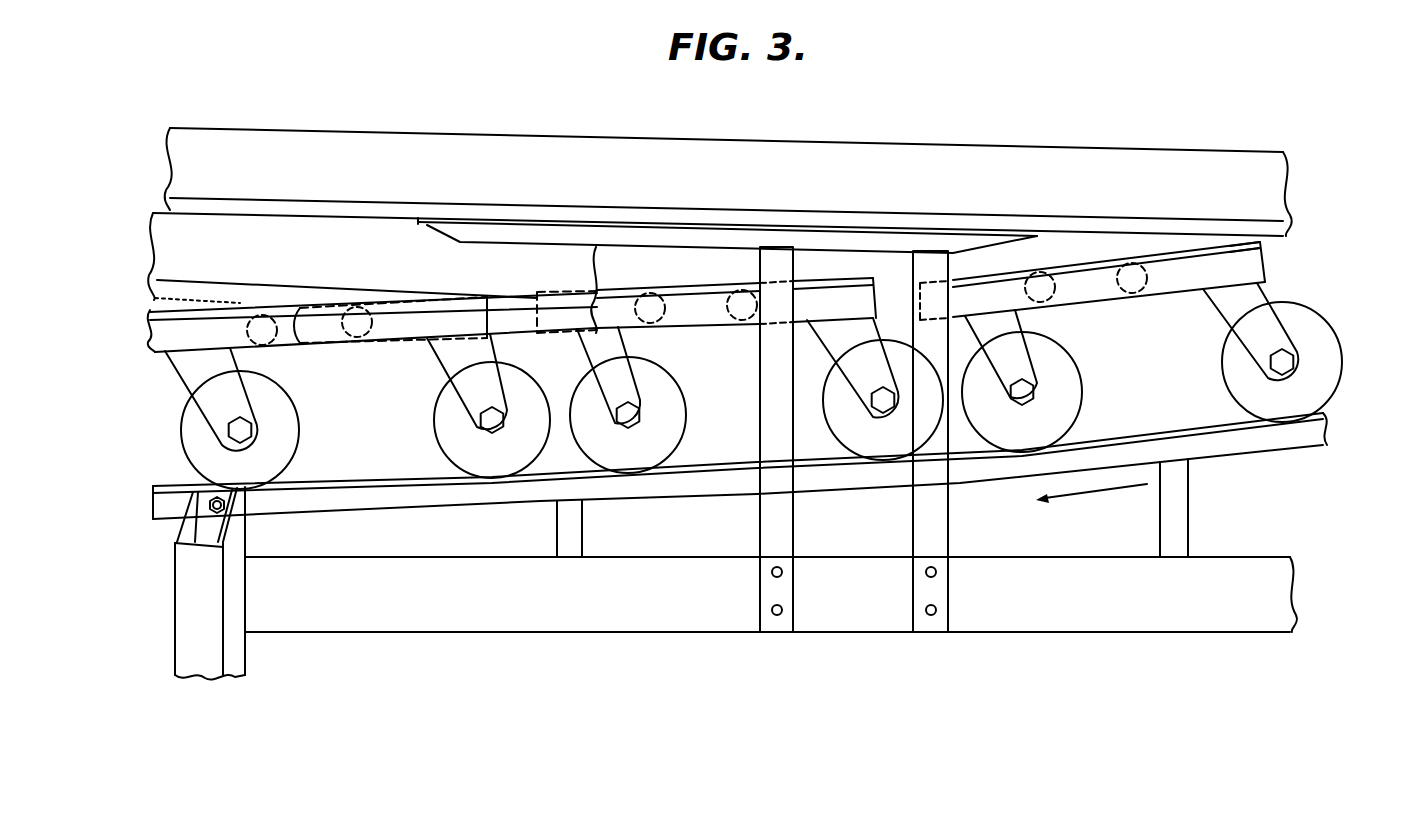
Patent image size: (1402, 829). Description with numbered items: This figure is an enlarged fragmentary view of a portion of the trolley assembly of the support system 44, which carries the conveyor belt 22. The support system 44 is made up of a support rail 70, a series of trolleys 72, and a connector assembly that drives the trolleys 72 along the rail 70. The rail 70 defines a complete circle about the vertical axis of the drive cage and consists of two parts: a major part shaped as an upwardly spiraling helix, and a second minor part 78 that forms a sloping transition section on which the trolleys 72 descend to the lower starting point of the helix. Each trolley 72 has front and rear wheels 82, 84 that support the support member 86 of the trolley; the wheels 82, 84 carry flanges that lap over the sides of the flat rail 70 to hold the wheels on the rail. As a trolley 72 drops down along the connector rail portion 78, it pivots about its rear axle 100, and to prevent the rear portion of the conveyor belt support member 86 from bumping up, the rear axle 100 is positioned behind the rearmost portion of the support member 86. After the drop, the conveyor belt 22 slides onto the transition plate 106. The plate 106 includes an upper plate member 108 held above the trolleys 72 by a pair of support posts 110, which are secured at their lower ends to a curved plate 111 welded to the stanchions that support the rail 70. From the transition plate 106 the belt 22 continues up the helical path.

The conveyor belt 22 is at (1170, 160).
The support system 44 is at (548, 655).
The support rail 70 is at (1205, 447).
The trolley 72 is at (1262, 268).
The second minor part of the rail 78 is at (985, 478).
The front wheel 82 is at (283, 449).
The rear wheel 84 is at (447, 425).
The support member 86 is at (1173, 283).
The rear axle 100 is at (887, 410).
The transition plate 106 is at (858, 213).
The upper plate member 108 is at (818, 243).
The support post 110 is at (767, 403).
The curved plate 111 is at (1022, 617).